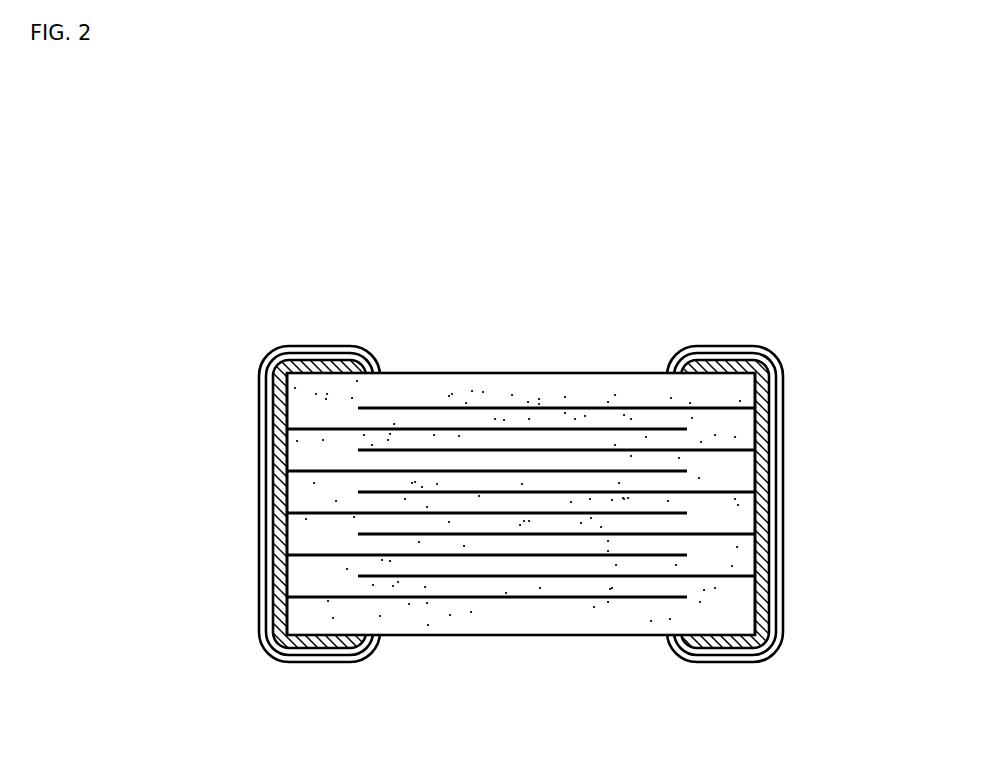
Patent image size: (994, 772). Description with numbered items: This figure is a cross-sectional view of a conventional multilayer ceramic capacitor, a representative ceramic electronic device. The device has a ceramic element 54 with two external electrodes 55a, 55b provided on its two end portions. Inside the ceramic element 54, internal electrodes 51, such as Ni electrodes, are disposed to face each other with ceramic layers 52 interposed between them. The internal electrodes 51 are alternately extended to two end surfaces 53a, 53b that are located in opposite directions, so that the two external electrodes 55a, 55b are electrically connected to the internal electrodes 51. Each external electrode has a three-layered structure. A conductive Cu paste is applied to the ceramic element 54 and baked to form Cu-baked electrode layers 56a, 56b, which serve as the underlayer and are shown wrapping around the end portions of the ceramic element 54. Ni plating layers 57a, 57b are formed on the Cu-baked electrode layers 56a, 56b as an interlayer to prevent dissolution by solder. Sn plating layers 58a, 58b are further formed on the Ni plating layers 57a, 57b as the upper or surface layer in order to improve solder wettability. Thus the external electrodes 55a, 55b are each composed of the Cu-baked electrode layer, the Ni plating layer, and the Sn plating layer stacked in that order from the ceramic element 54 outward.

The internal electrodes 51 is at (462, 452).
The ceramic layers 52 is at (612, 445).
The end surface 53a is at (287, 413).
The end surface 53b is at (755, 413).
The ceramic element 54 is at (533, 353).
The external electrode 55a is at (324, 504).
The external electrode 55b is at (694, 465).
The Cu-baked electrode layer 56a is at (275, 460).
The Cu-baked electrode layer 56b is at (770, 452).
The Ni plating layer 57a is at (267, 494).
The Ni plating layer 57b is at (778, 490).
The Sn plating layer 58a is at (250, 610).
The Sn plating layer 58b is at (792, 332).